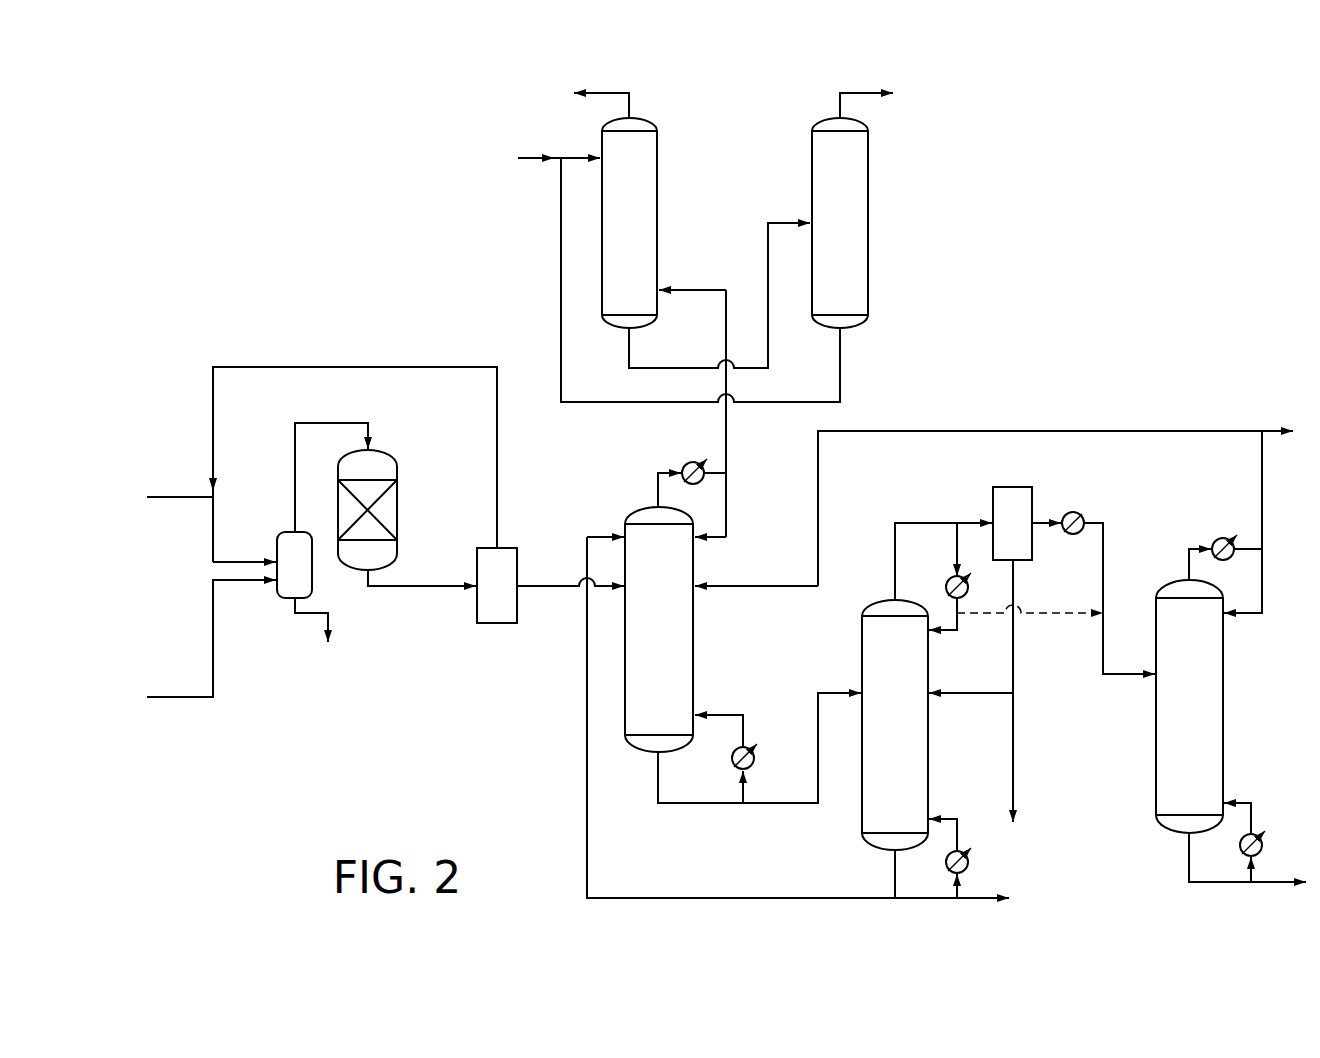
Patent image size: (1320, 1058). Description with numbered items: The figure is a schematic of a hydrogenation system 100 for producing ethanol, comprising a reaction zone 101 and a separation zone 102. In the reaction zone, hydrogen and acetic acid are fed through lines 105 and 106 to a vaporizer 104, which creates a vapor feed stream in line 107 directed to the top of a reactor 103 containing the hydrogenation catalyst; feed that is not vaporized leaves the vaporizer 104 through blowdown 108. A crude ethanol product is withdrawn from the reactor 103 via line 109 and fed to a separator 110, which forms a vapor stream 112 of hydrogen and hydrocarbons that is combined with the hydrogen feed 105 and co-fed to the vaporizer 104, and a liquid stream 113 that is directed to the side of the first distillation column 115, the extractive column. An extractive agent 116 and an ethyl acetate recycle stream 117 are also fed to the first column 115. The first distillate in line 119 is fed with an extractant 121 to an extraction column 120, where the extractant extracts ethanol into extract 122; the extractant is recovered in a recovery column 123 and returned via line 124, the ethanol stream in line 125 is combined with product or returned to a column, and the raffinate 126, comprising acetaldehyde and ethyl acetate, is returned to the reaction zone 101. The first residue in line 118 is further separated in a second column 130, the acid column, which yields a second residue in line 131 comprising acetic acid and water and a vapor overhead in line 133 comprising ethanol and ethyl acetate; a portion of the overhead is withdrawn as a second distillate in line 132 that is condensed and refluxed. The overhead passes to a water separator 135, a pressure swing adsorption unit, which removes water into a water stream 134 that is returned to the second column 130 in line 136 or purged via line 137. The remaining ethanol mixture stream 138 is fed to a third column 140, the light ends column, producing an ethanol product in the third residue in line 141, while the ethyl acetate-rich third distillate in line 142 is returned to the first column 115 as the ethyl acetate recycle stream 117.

The hydrogenation system 100 is at (1030, 271).
The reaction zone 101 is at (262, 750).
The separation zone 102 is at (945, 915).
The reactor 103 is at (378, 460).
The vaporizer 104 is at (283, 550).
The hydrogen feed line 105 is at (162, 500).
The acetic acid feed line 106 is at (168, 700).
The vapor feed stream line 107 is at (337, 422).
The blowdown 108 is at (306, 617).
The crude ethanol product line 109 is at (423, 590).
The separator 110 is at (500, 617).
The vapor stream 112 is at (497, 450).
The liquid stream 113 is at (543, 590).
The first distillation column 115 is at (682, 635).
The extractive agent 116 is at (590, 838).
The ethyl acetate recycle stream 117 is at (1007, 430).
The first residue line 118 is at (758, 808).
The first distillate line 119 is at (726, 440).
The extraction column 120 is at (638, 181).
The extractant 121 is at (533, 155).
The extract 122 is at (768, 265).
The recovery column 123 is at (857, 197).
The extractant return line 124 is at (840, 357).
The ethanol stream line 125 is at (857, 92).
The raffinate 126 is at (608, 92).
The second column 130 is at (882, 658).
The second residue line 131 is at (972, 895).
The second distillate line 132 is at (958, 622).
The vapor overhead line 133 is at (920, 520).
The water stream 134 is at (1013, 658).
The water separator 135 is at (1020, 502).
The water return line 136 is at (973, 695).
The water purge line 137 is at (1013, 760).
The ethanol mixture stream 138 is at (1105, 545).
The third column 140 is at (1208, 735).
The third residue line 141 is at (1210, 885).
The third distillate line 142 is at (1260, 470).